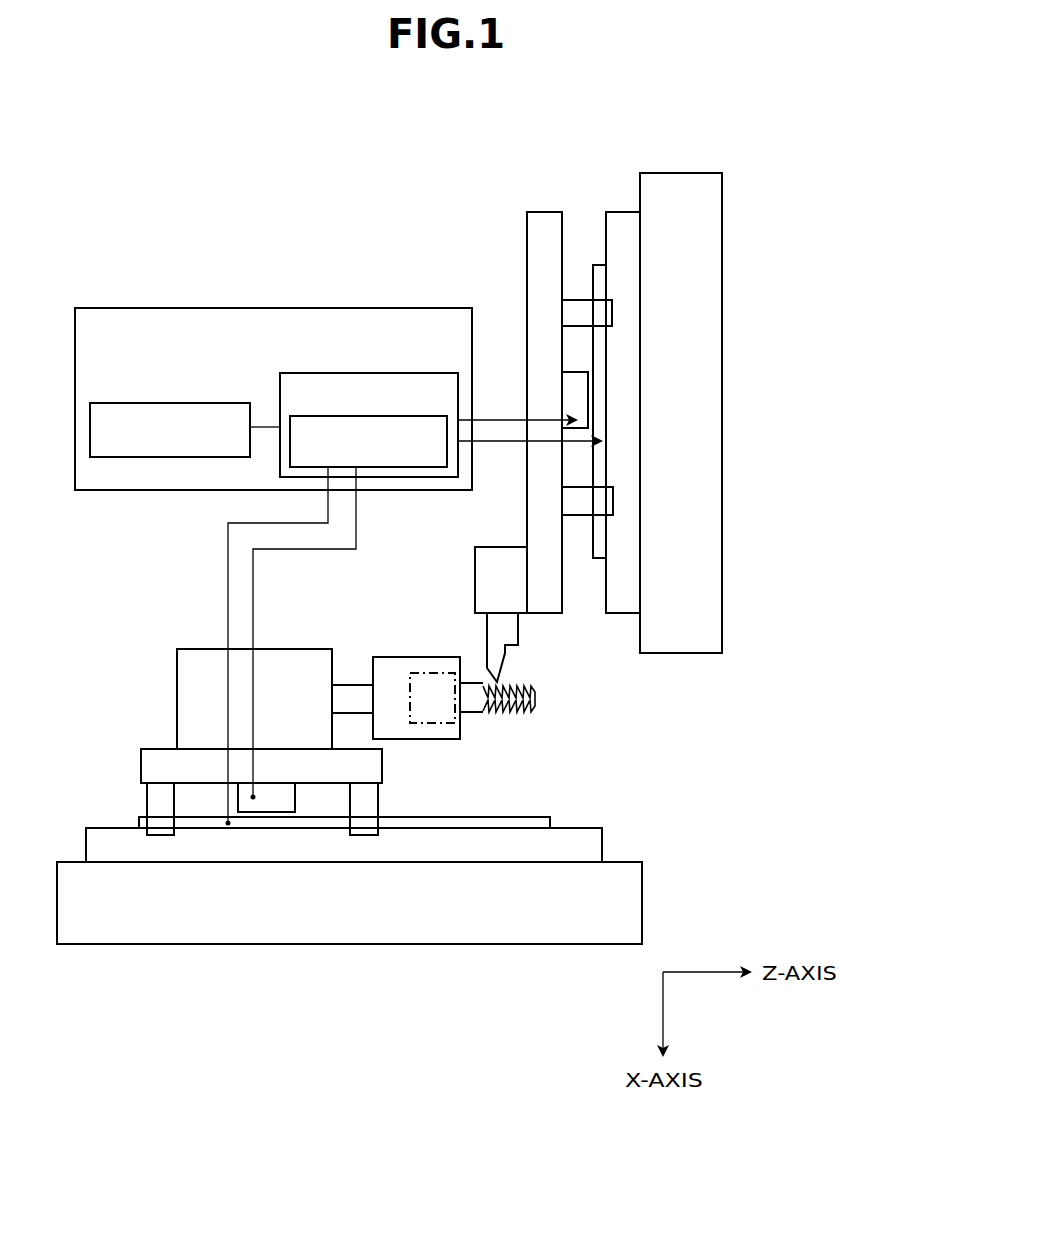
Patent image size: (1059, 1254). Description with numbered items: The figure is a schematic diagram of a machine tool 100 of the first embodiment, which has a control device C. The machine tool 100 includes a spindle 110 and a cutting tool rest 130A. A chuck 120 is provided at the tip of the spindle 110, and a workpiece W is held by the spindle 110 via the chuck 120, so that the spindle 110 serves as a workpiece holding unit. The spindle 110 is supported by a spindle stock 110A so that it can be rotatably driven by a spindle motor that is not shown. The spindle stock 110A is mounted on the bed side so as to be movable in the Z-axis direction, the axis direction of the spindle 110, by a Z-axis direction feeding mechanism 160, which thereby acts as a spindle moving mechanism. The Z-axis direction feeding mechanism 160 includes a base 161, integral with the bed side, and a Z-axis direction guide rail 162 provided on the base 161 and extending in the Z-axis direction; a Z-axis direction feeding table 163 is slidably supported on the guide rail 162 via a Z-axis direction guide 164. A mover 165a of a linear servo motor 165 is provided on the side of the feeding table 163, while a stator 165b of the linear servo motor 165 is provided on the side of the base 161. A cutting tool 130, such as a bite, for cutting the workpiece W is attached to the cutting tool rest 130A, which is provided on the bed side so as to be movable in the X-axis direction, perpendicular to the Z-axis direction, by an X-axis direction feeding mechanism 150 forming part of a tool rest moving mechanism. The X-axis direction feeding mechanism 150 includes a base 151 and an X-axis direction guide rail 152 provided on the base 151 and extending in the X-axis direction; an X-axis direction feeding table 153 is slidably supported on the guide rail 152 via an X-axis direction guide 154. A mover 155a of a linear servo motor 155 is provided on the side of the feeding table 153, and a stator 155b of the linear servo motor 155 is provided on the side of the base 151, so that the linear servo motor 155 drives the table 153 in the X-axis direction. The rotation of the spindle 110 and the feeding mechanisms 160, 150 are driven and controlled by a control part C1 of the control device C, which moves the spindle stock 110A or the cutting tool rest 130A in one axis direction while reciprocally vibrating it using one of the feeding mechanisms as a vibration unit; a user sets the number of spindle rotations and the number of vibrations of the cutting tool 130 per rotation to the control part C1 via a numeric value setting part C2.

The machine tool 100 is at (200, 216).
The control device C is at (273, 306).
The control part C1 is at (375, 372).
The numeric value setting part C2 is at (185, 402).
The spindle 110 is at (357, 697).
The spindle stock 110A is at (200, 680).
The chuck 120 is at (412, 673).
The workpiece W is at (497, 712).
The cutting tool 130 is at (502, 652).
The cutting tool rest 130A is at (502, 563).
The X-axis direction feeding mechanism 150 is at (706, 94).
The base 151 is at (690, 183).
The X-axis direction guide rail 152 is at (613, 223).
The X-axis direction feeding table 153 is at (530, 283).
The X-axis direction guide 154 is at (577, 310).
The linear servo motor 155 is at (720, 390).
The mover 155a is at (578, 382).
The stator 155b is at (600, 405).
The Z-axis direction feeding mechanism 160 is at (126, 1002).
The base 161 is at (492, 920).
The Z-axis direction guide rail 162 is at (597, 845).
The Z-axis direction feeding table 163 is at (165, 757).
The Z-axis direction guide 164 is at (162, 807).
The linear servo motor 165 is at (344, 913).
The mover 165a is at (280, 798).
The stator 165b is at (327, 820).